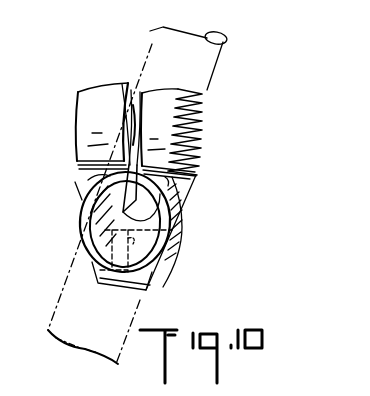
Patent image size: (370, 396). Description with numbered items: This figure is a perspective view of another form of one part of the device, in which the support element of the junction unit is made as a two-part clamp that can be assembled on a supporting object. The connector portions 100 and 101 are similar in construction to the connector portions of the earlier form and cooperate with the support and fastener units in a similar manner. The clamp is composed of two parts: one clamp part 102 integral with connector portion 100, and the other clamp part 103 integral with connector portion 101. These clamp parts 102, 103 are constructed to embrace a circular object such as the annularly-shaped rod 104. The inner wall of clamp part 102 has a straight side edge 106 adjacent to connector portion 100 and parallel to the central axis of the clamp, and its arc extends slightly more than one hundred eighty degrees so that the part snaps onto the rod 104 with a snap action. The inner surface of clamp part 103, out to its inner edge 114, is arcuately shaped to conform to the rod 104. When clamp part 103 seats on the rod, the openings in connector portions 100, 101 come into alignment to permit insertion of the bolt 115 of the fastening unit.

The connector portion 100 is at (108, 94).
The connector portion 101 is at (178, 99).
The clamp part 102 is at (82, 220).
The clamp part 103 is at (174, 232).
The rod 104 is at (208, 62).
The straight side edge 106 is at (133, 229).
The inner edge 114 is at (141, 193).
The bolt 115 is at (142, 94).